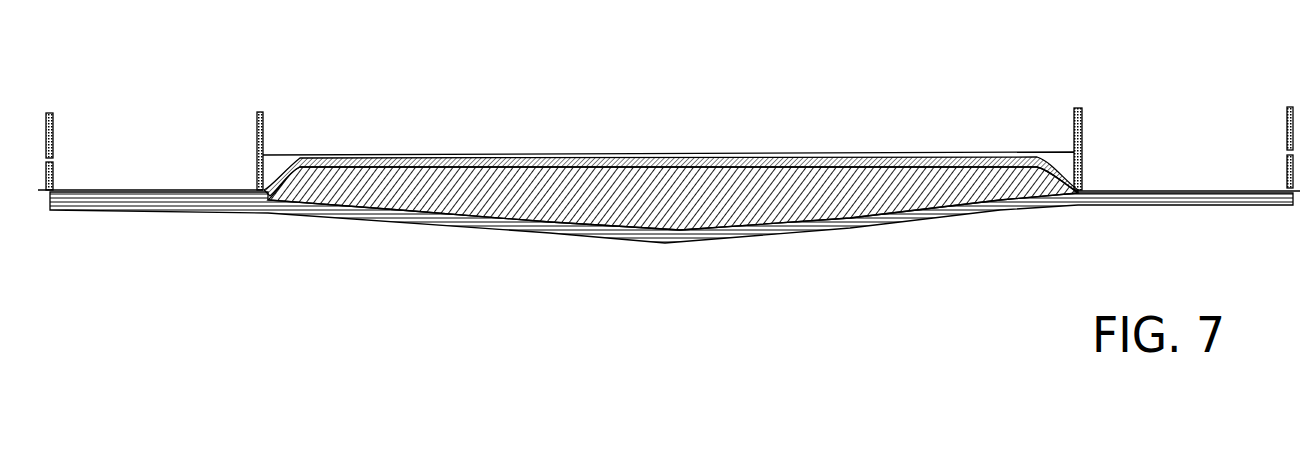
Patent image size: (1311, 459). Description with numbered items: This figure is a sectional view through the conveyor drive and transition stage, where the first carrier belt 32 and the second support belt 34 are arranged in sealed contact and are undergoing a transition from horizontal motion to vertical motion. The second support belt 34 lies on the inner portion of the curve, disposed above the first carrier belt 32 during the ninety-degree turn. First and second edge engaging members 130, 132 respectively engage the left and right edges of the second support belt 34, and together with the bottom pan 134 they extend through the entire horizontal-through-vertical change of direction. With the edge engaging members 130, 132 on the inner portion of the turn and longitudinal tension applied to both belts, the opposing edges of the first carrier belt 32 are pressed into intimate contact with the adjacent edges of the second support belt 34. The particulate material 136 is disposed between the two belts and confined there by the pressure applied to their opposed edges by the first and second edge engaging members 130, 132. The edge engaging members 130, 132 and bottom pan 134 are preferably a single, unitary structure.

The first carrier belt 32 is at (505, 225).
The second support belt 34 is at (766, 158).
The first edge engaging member 130 is at (263, 127).
The second edge engaging member 132 is at (1074, 130).
The bottom pan 134 is at (503, 157).
The particulate material 136 is at (735, 208).